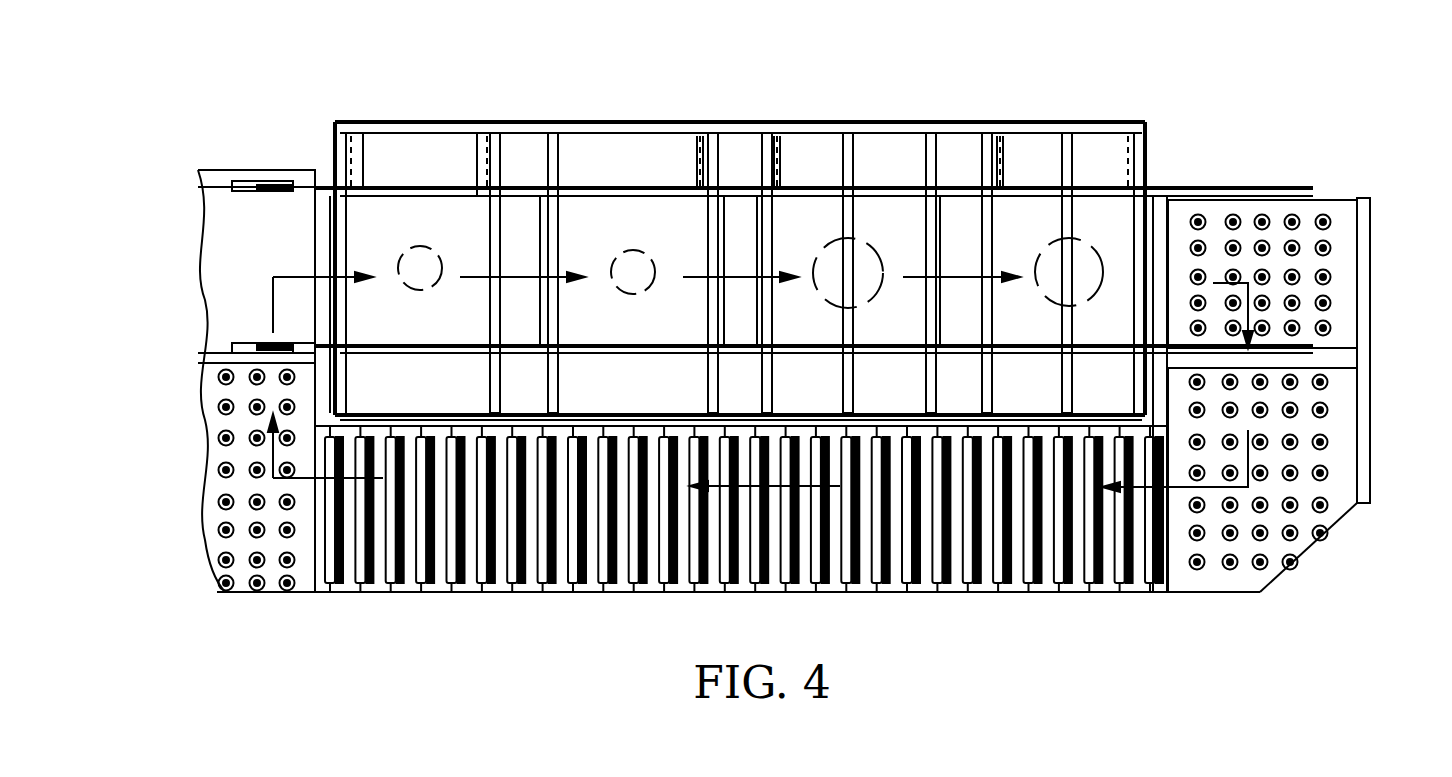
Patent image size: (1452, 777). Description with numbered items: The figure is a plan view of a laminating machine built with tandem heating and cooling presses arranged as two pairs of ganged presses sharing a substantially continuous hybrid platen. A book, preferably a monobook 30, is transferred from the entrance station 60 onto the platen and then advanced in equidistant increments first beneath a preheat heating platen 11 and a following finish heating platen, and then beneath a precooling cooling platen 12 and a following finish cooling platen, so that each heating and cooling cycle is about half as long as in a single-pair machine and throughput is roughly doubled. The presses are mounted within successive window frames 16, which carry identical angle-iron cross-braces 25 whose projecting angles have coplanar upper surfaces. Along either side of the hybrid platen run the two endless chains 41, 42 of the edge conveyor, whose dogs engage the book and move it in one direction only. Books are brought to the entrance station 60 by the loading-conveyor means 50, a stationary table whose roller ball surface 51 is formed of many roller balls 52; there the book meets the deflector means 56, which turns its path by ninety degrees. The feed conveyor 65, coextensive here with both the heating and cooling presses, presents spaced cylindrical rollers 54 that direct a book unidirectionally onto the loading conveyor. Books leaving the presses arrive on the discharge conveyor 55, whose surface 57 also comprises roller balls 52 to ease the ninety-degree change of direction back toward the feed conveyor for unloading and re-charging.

The heating platen 11 is at (403, 232).
The cooling platen 12 is at (788, 232).
The window frames 16 is at (1063, 157).
The cross-braces 25 is at (653, 124).
The monobook 30 is at (287, 250).
The endless chain 41 is at (320, 185).
The endless chain 42 is at (323, 347).
The loading-conveyor means 50 is at (262, 600).
The roller ball surface 51 is at (243, 572).
The roller balls 52 is at (220, 471).
The cylindrical rollers 54 is at (1093, 560).
The discharge conveyor 55 is at (1296, 578).
The deflector means 56 is at (1370, 407).
The roller ball surface of discharge conveyor 57 is at (1343, 497).
The entrance station 60 is at (260, 163).
The feed conveyor 65 is at (535, 598).